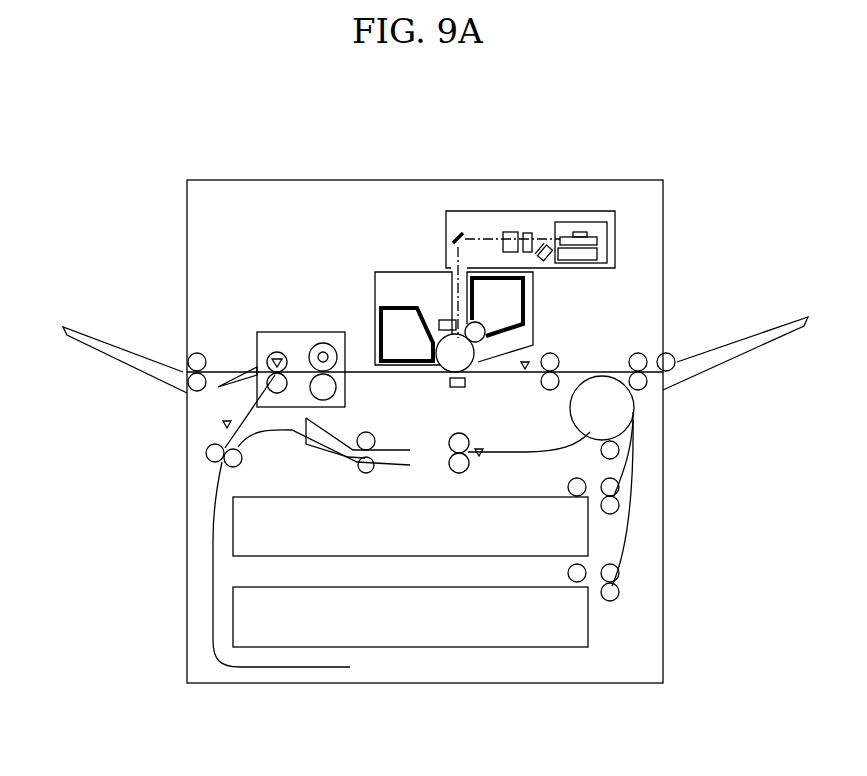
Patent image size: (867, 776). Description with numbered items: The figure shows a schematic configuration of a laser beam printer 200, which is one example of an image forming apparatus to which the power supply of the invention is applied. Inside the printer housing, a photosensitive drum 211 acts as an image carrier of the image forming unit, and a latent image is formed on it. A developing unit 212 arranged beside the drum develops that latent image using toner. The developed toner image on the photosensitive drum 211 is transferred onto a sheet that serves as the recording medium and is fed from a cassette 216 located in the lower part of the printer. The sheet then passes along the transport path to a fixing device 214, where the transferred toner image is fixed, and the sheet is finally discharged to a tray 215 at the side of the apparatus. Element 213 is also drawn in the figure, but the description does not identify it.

The laser beam printer 200 is at (370, 192).
The photosensitive drum 211 is at (403, 272).
The developing unit 212 is at (485, 320).
The photosensitive drum 213 is at (475, 373).
The fixing device 214 is at (294, 332).
The tray 215 is at (104, 345).
The cassette 216 is at (567, 530).